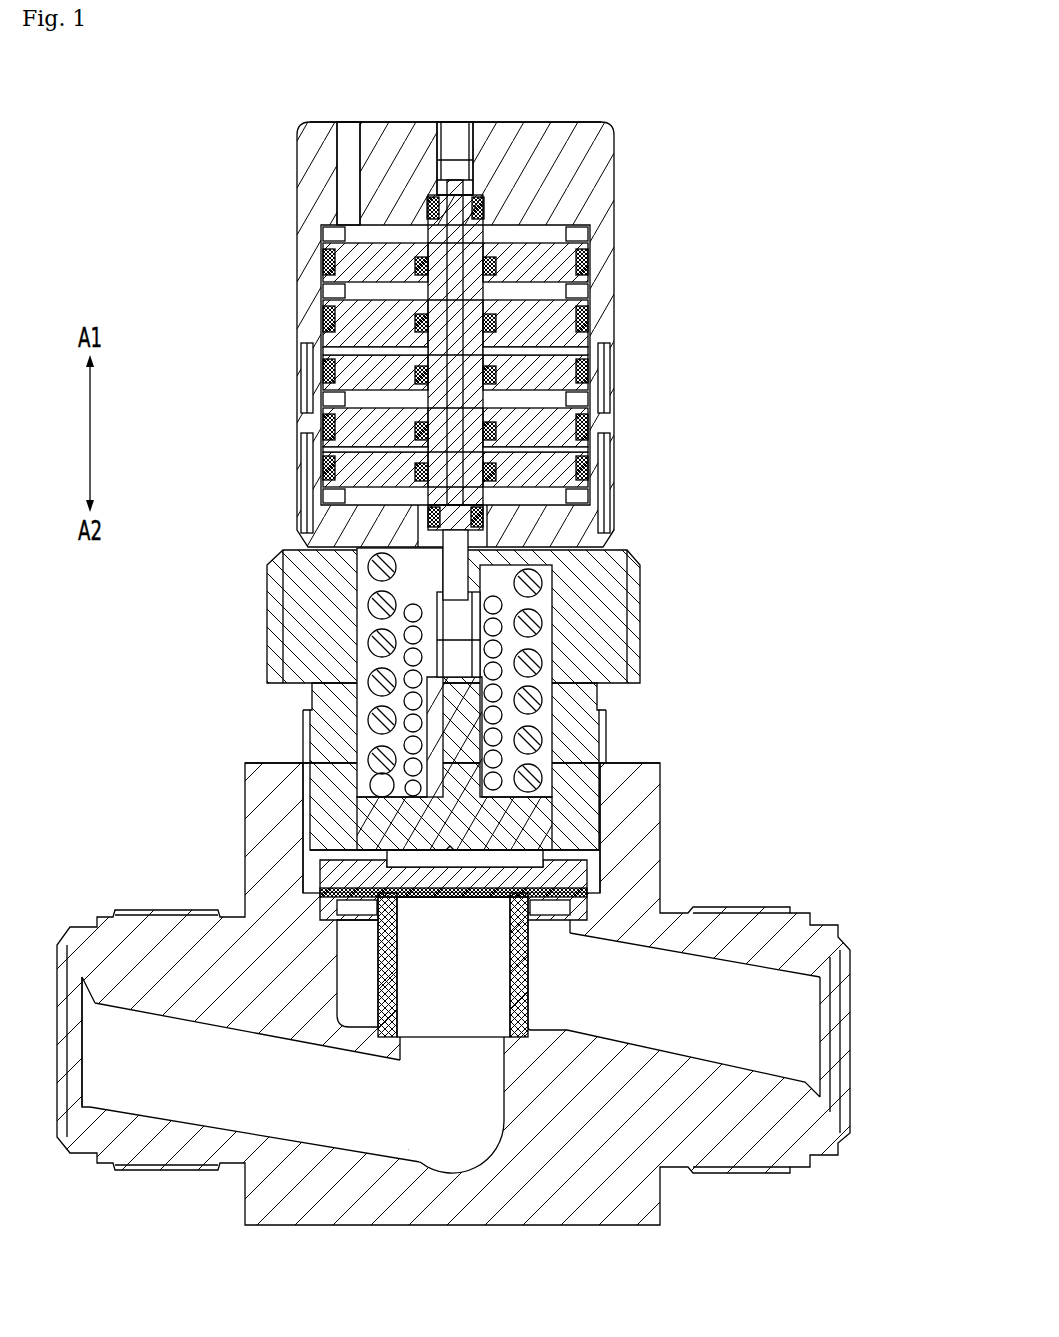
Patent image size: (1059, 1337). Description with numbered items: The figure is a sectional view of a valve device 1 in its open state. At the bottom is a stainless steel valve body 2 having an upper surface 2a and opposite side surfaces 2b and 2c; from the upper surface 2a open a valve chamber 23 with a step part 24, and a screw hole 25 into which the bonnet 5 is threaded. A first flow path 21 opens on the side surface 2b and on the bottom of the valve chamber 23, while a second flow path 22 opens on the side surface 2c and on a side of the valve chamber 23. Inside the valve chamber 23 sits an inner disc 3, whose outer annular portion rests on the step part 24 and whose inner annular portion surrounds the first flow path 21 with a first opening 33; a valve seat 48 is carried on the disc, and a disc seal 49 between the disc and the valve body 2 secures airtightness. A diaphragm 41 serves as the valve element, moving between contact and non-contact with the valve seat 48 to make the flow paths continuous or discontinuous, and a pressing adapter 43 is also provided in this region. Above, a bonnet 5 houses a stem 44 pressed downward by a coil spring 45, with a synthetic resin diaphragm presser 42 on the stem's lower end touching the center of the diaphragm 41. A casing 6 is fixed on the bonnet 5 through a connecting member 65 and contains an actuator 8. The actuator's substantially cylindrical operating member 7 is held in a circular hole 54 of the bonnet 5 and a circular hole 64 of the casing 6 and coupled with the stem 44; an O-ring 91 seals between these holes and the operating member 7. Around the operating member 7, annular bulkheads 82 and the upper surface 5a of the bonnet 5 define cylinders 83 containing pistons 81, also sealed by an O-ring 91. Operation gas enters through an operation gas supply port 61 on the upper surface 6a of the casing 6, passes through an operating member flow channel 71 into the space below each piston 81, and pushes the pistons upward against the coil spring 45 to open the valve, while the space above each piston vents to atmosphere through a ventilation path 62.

The valve device 1 is at (742, 66).
The valve body 2 is at (628, 790).
The upper surface 2a is at (650, 765).
The side surface 2b is at (47, 920).
The side surface 2c is at (870, 918).
The inner disc 3 is at (545, 940).
The bonnet 5 is at (640, 598).
The upper surface 5a is at (307, 518).
The casing 6 is at (617, 136).
The upper surface 6a is at (400, 120).
The operating member 7 is at (470, 340).
The actuator 8 is at (345, 230).
The first flow path 21 is at (132, 1067).
The second flow path 22 is at (710, 990).
The valve chamber 23 is at (528, 997).
The step part 24 is at (570, 928).
The screw hole 25 is at (604, 757).
The first opening 33 is at (355, 872).
The diaphragm 41 is at (400, 878).
The diaphragm presser 42 is at (390, 857).
The pressing adapter 43 is at (600, 862).
The stem 44 is at (602, 710).
The coil spring 45 is at (395, 614).
The valve seat 48 is at (340, 905).
The disc seal 49 is at (373, 1037).
The circular hole 54 is at (385, 505).
The operation gas supply port 61 is at (464, 122).
The ventilation path 62 is at (348, 183).
The circular hole 64 is at (452, 175).
The connecting member 65 is at (614, 440).
The operating member flow channel 71 is at (495, 175).
The piston 81 is at (335, 240).
The bulkhead 82 is at (345, 322).
The cylinder 83 is at (338, 292).
The O-ring 91 is at (590, 253).